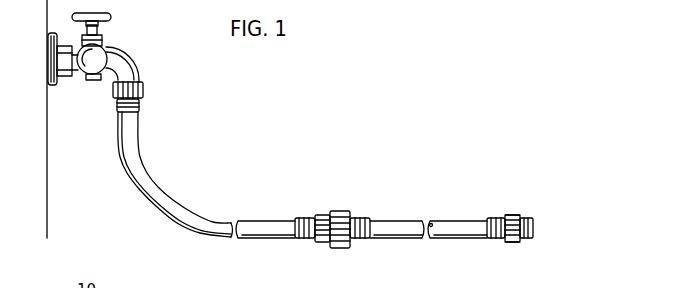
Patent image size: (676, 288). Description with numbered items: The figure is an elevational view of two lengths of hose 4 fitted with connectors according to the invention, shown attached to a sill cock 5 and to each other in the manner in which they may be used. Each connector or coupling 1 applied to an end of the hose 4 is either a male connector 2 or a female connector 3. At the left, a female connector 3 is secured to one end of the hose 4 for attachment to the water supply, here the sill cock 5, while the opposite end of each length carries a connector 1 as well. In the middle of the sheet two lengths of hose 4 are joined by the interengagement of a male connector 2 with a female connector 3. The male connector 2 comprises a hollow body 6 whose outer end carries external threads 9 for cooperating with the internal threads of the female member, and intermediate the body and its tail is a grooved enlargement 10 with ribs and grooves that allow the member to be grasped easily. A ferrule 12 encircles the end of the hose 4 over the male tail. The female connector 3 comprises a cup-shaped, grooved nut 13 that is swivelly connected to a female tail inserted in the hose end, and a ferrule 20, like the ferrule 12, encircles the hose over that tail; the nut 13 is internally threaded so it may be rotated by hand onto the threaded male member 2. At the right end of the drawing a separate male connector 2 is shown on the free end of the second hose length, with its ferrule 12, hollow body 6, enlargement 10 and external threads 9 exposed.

The connector 1 is at (362, 196).
The male connector 2 is at (314, 206).
The female connector 3 is at (148, 90).
The hose 4 is at (157, 215).
The sill cock 5 is at (127, 55).
The hollow body 6 is at (320, 243).
The external threads 9 is at (532, 220).
The enlargement 10 is at (508, 245).
The ferrule 12 is at (305, 240).
The nut 13 is at (346, 210).
The ferrule 20 is at (365, 239).